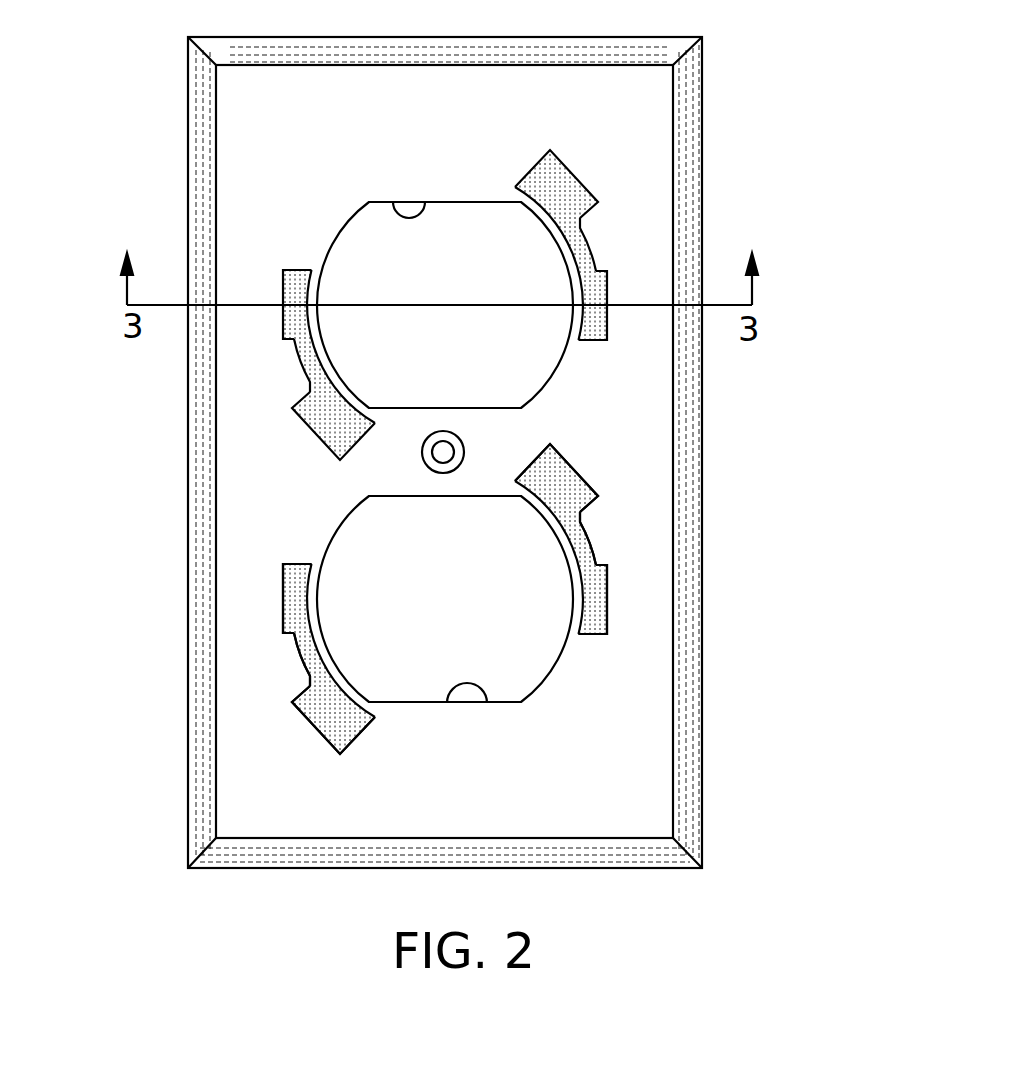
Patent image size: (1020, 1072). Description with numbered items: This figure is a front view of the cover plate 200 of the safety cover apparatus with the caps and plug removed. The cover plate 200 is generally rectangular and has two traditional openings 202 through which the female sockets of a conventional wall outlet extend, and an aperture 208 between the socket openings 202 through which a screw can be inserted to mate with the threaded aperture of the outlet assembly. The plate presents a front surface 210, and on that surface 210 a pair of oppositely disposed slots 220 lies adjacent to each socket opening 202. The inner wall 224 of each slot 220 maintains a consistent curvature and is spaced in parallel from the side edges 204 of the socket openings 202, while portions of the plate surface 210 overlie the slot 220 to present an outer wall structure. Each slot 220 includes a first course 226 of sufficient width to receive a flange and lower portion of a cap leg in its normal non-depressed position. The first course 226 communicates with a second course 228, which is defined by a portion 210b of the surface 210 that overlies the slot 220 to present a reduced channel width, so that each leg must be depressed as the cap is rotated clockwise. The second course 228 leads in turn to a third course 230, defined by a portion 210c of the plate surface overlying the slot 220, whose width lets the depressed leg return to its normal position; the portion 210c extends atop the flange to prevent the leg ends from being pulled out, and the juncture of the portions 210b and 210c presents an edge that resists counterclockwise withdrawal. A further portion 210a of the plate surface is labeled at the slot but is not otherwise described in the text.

The cover plate 200 is at (715, 88).
The openings 202 is at (398, 203).
The side edges 204 is at (333, 362).
The aperture 208 is at (443, 451).
The front surface 210 is at (447, 453).
The first tab portion 210a is at (582, 473).
The portion of cover plate surface 210b is at (588, 523).
The portion of cover plate surface 210c is at (608, 627).
The slots 220 is at (533, 170).
The inner wall 224 is at (562, 235).
The first course/channel 226 is at (557, 170).
The second course/channel portion 228 is at (580, 243).
The third course/channel 230 is at (292, 288).